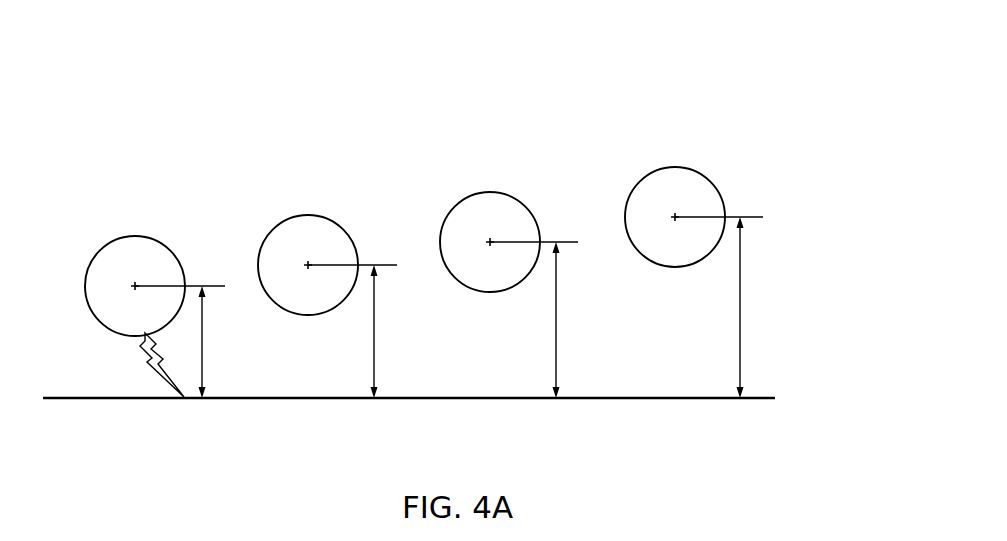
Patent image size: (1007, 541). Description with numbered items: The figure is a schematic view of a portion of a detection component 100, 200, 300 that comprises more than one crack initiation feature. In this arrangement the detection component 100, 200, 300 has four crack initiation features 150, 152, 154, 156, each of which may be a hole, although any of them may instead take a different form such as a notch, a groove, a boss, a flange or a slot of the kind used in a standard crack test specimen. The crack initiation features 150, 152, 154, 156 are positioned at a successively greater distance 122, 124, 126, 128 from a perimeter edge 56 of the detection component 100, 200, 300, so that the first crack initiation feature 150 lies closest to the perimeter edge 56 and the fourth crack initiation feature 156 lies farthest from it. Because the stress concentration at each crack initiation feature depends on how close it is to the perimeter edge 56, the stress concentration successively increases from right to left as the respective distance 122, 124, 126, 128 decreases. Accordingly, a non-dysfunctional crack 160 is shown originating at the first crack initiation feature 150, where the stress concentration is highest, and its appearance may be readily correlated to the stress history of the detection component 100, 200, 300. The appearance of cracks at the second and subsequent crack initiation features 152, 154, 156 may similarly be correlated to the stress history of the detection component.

The detection component 100 is at (586, 52).
The detection component 200 is at (586, 52).
The detection component 300 is at (583, 45).
The perimeter edge 56 is at (519, 401).
The distance 122 is at (225, 342).
The distance 124 is at (397, 331).
The distance 126 is at (579, 320).
The distance 128 is at (764, 307).
The first crack initiation feature 150 is at (96, 326).
The second crack initiation feature 152 is at (312, 214).
The third crack initiation feature 154 is at (493, 191).
The fourth crack initiation feature 156 is at (676, 167).
The non-dysfunctional crack 160 is at (138, 353).